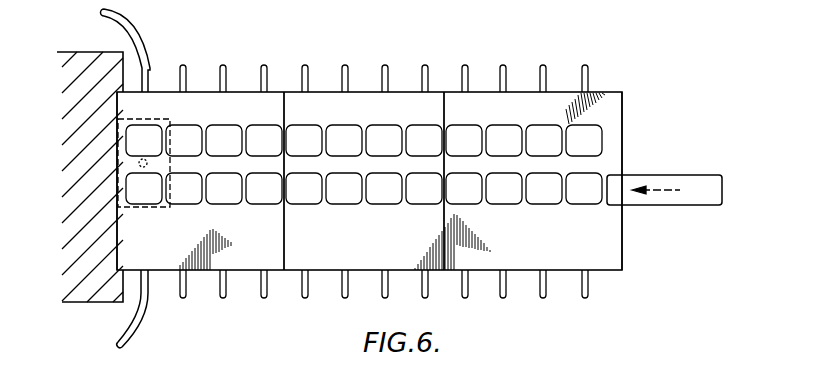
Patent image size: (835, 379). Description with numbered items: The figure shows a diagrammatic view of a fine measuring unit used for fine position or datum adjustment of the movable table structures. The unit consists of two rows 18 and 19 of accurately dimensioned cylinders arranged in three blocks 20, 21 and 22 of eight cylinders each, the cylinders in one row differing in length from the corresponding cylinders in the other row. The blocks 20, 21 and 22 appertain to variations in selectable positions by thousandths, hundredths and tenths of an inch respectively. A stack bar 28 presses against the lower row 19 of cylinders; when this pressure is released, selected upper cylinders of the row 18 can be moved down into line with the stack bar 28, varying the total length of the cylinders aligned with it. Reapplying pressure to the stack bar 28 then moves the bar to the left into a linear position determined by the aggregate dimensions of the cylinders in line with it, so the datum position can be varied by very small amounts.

The row of cylinders 18 is at (301, 133).
The row of lower cylinders 19 is at (308, 193).
The block 20 is at (230, 100).
The block 21 is at (393, 102).
The block 22 is at (553, 103).
The stack bar 28 is at (665, 182).